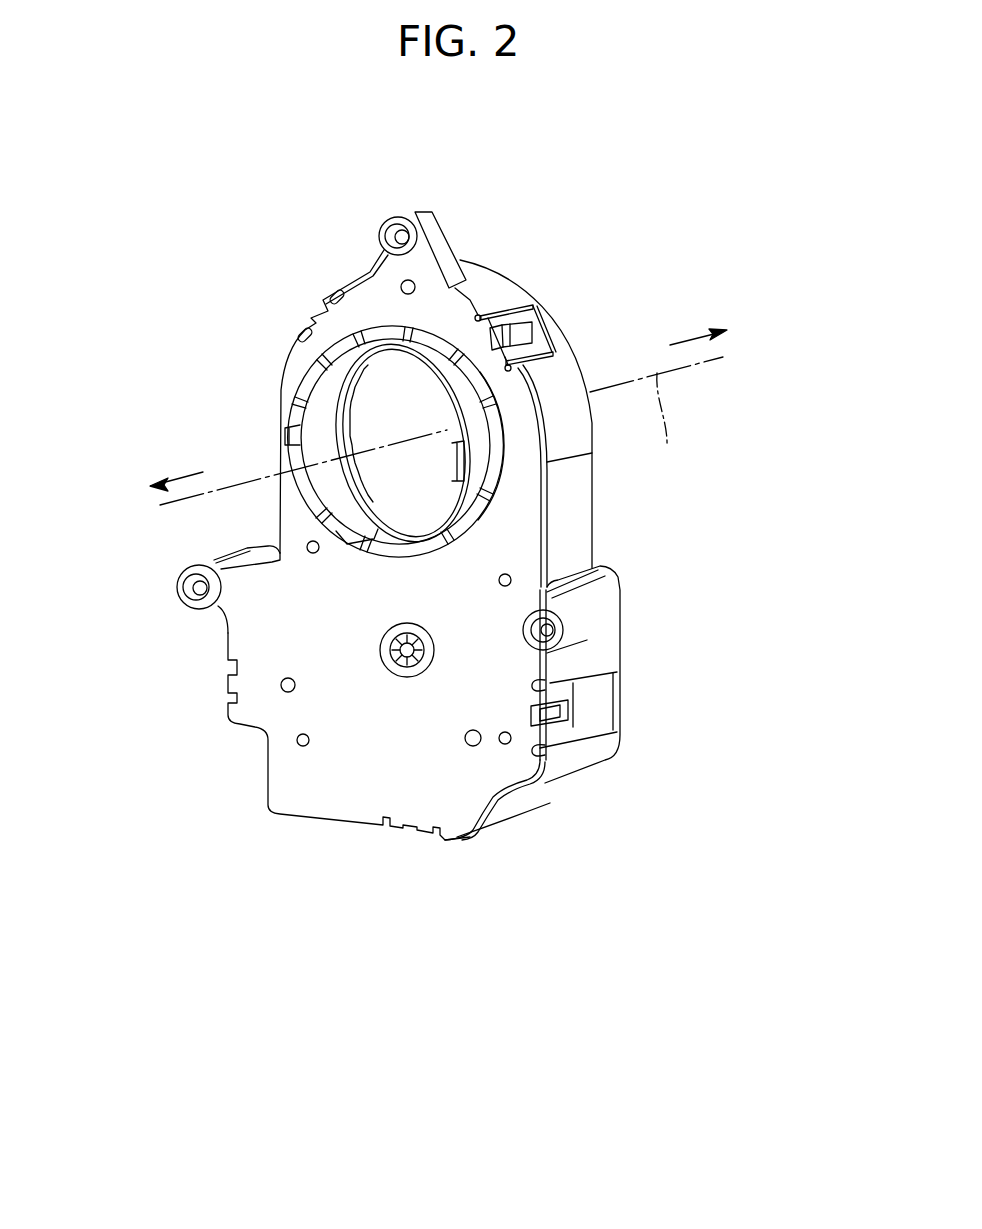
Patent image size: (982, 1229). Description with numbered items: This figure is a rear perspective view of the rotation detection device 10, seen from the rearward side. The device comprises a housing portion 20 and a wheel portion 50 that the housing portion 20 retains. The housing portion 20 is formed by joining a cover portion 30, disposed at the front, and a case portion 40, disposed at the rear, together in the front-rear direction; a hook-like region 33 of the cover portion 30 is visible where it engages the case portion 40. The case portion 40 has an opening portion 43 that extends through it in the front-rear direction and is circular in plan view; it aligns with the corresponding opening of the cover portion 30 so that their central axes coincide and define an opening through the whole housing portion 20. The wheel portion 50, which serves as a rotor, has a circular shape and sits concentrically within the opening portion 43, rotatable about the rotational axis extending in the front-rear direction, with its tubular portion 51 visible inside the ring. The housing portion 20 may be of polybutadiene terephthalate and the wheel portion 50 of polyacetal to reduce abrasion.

The rotation detection device 10 is at (394, 988).
The housing portion 20 is at (608, 876).
The cover portion 30 is at (593, 750).
The hook portion of cover 33 is at (358, 385).
The case portion 40 is at (470, 783).
The opening portion 43 is at (498, 488).
The wheel portion 50 is at (327, 380).
The tubular portion 51 is at (323, 415).